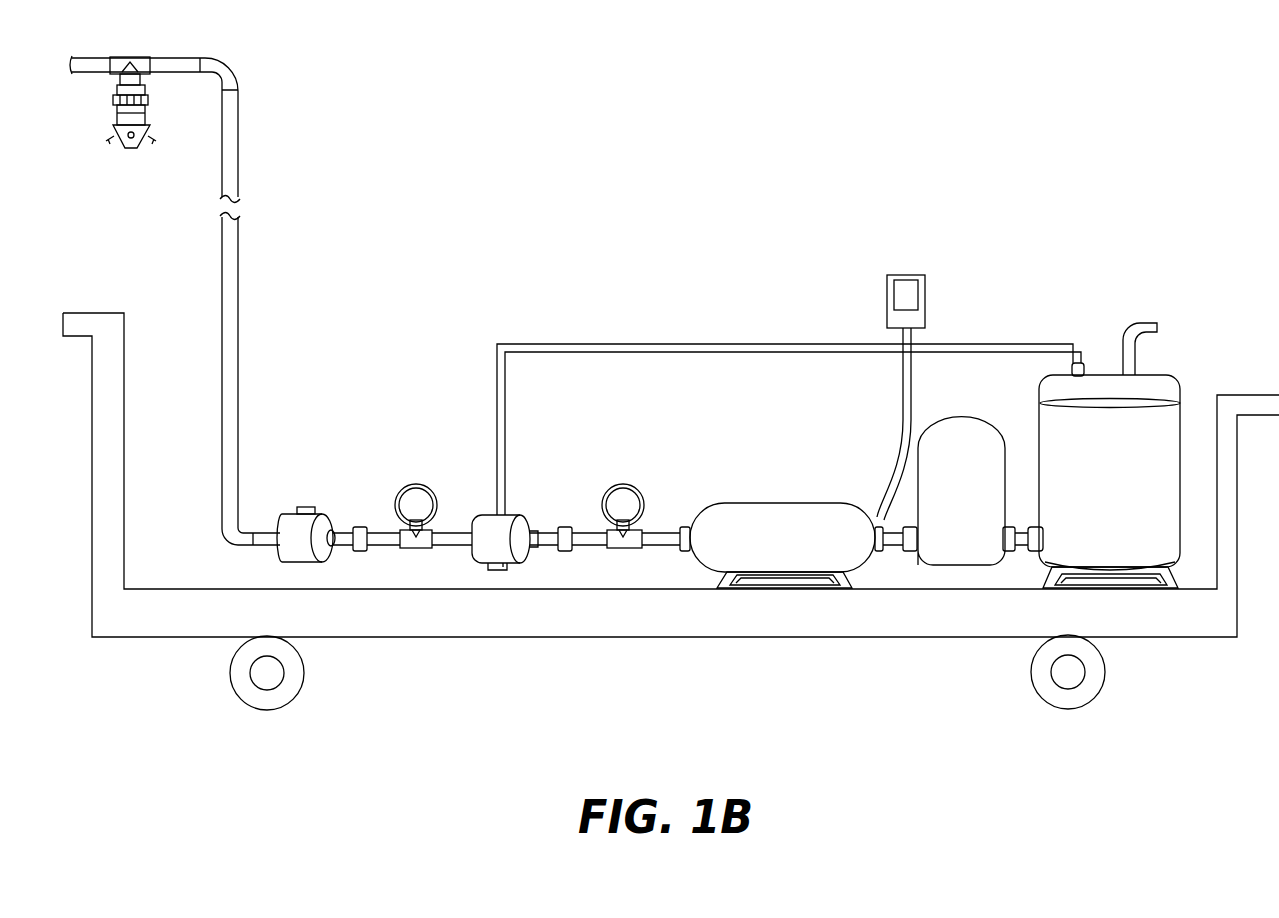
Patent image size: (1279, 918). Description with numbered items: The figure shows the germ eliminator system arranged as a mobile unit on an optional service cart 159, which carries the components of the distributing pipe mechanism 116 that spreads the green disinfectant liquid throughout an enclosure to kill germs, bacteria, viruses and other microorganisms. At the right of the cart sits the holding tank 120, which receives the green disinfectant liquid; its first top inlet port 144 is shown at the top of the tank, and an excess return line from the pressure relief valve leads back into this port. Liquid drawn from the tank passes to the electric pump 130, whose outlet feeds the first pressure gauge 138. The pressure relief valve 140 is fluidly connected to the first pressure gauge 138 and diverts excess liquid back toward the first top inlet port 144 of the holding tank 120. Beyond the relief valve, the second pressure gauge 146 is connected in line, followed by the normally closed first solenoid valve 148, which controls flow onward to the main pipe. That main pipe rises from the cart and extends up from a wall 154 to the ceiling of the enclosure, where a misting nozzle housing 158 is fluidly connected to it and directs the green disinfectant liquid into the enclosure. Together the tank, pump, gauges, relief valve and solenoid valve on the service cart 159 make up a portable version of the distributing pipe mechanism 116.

The distributing pipe mechanism 116 is at (238, 348).
The holding tank 120 is at (1133, 487).
The electric pump 130 is at (763, 517).
The first pressure gauge 138 is at (622, 483).
The pressure relief valve 140 is at (494, 571).
The first top inlet port 144 is at (1085, 367).
The second pressure gauge 146 is at (422, 483).
The first solenoid valve 148 is at (306, 507).
The wall 154 is at (232, 72).
The misting nozzle housing 158 is at (140, 147).
The service cart 159 is at (1232, 403).